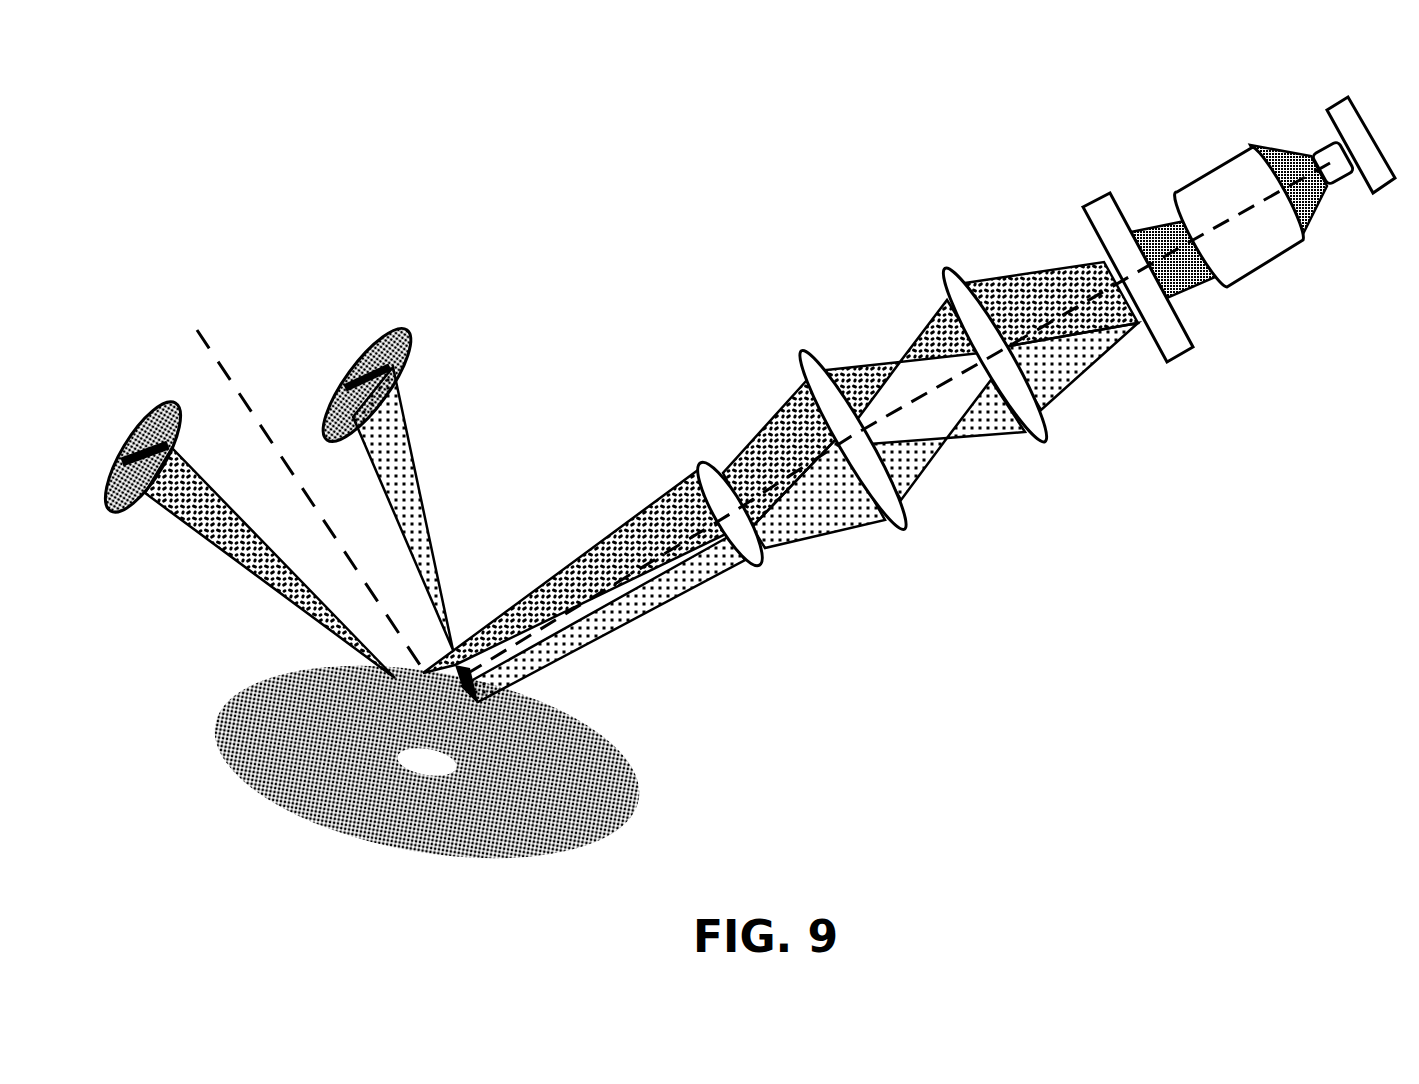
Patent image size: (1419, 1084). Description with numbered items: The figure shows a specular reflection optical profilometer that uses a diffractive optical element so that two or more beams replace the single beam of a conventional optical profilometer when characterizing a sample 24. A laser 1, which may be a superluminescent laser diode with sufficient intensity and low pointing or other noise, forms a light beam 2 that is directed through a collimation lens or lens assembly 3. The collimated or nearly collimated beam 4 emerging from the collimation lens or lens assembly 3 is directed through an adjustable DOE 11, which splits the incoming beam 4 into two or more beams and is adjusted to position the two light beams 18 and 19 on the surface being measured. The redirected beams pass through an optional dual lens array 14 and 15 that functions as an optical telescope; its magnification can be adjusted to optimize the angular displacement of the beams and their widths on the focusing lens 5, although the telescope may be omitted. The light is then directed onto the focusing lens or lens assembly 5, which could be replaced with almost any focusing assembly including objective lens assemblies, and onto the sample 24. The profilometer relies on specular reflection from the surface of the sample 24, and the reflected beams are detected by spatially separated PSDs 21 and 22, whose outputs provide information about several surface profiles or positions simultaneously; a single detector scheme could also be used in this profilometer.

The laser 1 is at (1387, 197).
The light beam 2 is at (1280, 150).
The collimation lens or lens assembly 3 is at (1223, 163).
The collimated beam 4 is at (1157, 213).
The DOE 11 is at (1098, 197).
The light beam 18 is at (1032, 265).
The light beam 19 is at (1090, 373).
The dual lens array lens 14 is at (947, 263).
The dual lens array lens 15 is at (802, 347).
The focusing lens or lens assembly 5 is at (702, 462).
The PSD 21 is at (401, 328).
The PSD 22 is at (130, 517).
The sample 24 is at (642, 780).